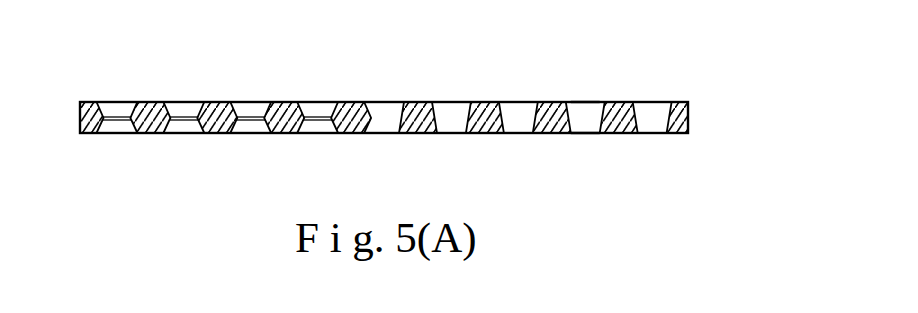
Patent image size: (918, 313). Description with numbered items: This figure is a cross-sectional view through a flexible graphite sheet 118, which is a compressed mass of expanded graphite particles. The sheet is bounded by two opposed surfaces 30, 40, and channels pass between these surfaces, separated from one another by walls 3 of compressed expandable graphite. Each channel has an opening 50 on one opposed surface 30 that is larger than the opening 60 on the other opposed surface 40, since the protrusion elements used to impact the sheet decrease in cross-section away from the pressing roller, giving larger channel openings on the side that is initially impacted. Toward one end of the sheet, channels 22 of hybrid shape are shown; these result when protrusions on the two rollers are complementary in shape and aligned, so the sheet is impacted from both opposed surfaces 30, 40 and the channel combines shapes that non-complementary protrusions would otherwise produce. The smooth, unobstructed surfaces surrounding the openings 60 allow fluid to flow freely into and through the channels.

The flexible graphite sheet 118 is at (689, 107).
The channels 22 is at (248, 101).
The opposed surface 30 is at (417, 101).
The opposed surface 40 is at (416, 134).
The openings 50 is at (583, 102).
The walls 3 is at (617, 102).
The openings 60 is at (585, 134).